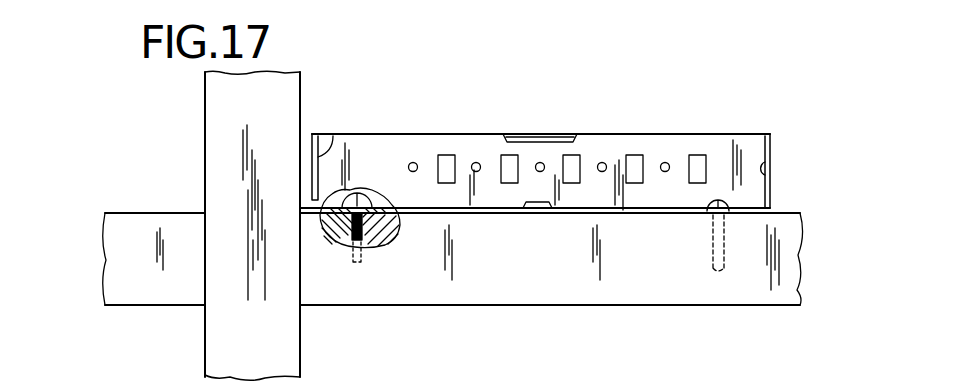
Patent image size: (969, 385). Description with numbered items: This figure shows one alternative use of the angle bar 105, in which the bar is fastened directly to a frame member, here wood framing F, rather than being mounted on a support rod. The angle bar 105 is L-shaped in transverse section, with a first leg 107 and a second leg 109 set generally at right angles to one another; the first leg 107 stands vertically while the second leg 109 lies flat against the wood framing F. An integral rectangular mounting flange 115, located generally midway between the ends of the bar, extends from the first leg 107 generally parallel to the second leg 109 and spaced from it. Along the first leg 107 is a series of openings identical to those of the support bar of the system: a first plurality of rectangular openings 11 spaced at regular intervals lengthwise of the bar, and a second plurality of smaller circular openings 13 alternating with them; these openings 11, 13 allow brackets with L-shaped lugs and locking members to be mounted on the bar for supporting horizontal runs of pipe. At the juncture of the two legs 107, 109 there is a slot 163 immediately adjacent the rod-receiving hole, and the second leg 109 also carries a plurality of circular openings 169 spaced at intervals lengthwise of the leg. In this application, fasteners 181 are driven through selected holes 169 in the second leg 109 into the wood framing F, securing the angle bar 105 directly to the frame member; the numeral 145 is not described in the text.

The wood framing F is at (575, 290).
The angle bar 105 is at (740, 134).
The first leg 107 is at (686, 143).
The second leg 109 is at (740, 207).
The mounting flange 115 is at (540, 137).
The slot 163 is at (548, 208).
The rectangular openings 11 is at (393, 153).
The circular openings 13 is at (665, 162).
The clip 145 is at (332, 150).
The fasteners 181 is at (375, 245).
The circular openings 169 is at (347, 246).